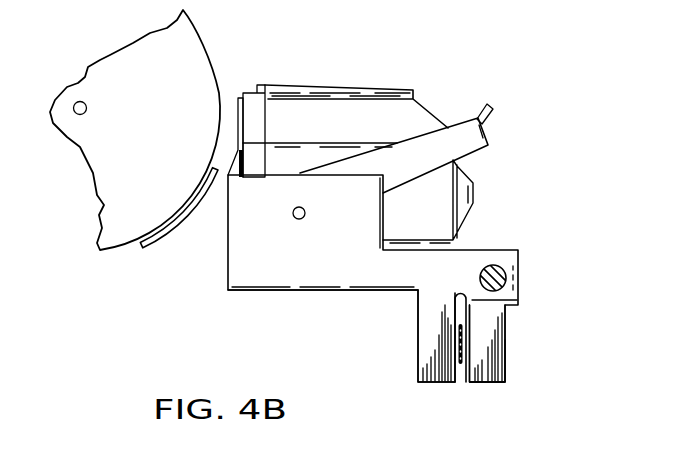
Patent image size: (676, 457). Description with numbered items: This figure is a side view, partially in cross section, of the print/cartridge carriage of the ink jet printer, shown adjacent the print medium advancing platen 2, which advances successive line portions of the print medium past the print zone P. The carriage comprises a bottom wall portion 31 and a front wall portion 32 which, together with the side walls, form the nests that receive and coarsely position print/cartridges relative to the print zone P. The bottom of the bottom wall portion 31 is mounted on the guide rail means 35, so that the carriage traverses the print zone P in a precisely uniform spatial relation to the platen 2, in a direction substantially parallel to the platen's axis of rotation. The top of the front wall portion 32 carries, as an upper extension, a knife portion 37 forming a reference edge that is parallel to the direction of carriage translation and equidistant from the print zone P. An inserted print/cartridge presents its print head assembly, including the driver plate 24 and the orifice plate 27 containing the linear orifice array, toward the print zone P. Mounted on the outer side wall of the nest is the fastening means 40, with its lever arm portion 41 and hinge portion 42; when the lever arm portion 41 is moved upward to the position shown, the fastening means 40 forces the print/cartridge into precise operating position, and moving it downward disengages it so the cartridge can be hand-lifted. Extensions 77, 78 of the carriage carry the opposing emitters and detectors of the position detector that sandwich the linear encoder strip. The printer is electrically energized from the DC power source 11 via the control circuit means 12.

The print medium advancing platen 2 is at (113, 68).
The print zone P is at (209, 117).
The knife portions 37 is at (213, 155).
The orifice plate 27 is at (236, 105).
The driver plate 24 is at (246, 90).
The fastening means 40 is at (423, 155).
The lever arm portion 41 is at (486, 104).
The hinge portion 42 is at (303, 218).
The front wall portion 32 is at (243, 260).
The bottom wall portion 31 is at (291, 290).
The guide rail means 35 is at (521, 280).
The extension 77 is at (418, 348).
The DC power source 11 is at (465, 350).
The control circuit means 12 is at (515, 353).
The extension 78 is at (507, 373).